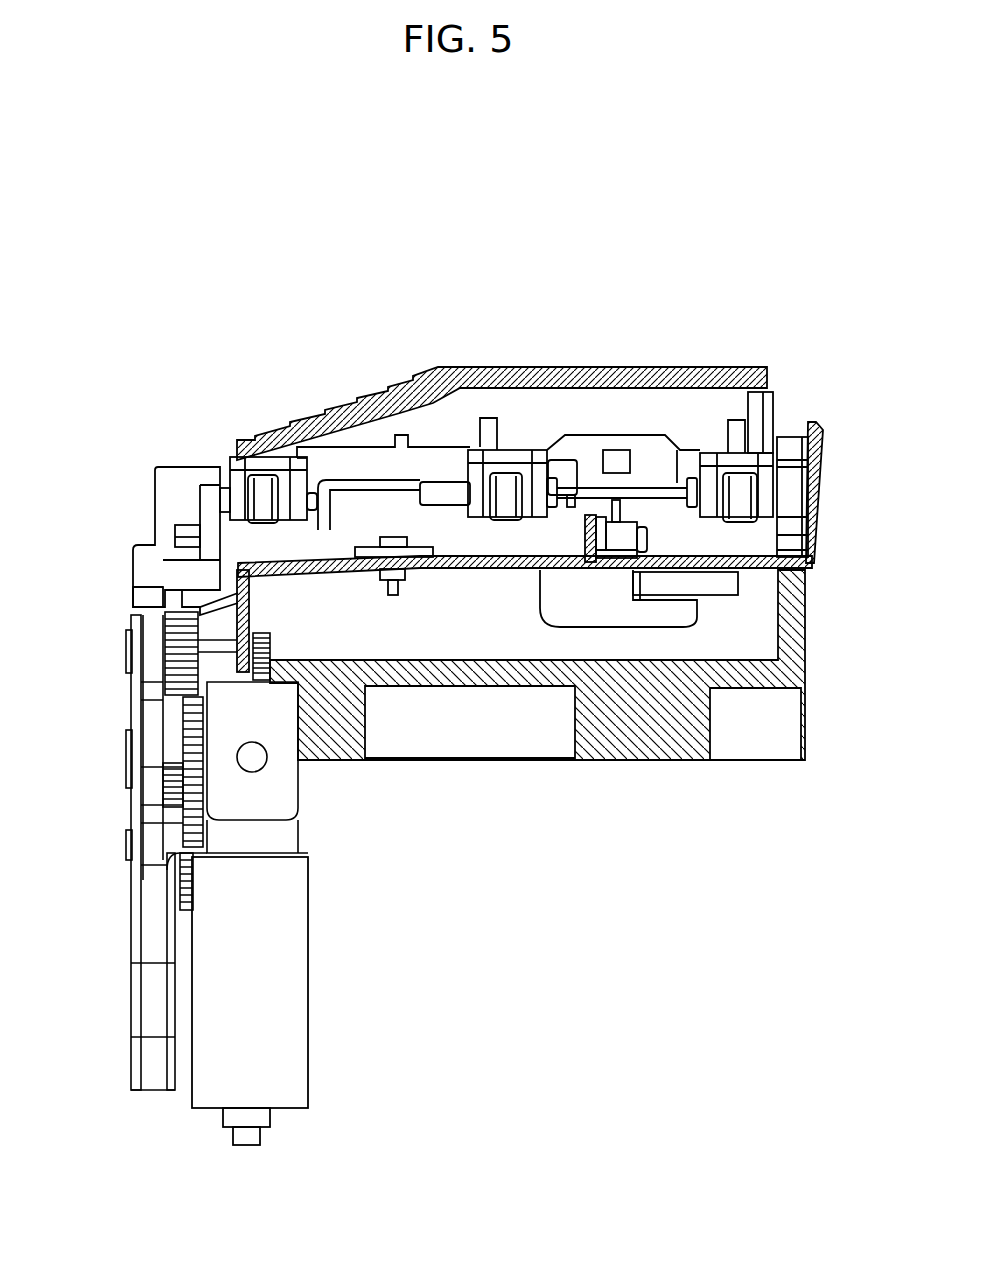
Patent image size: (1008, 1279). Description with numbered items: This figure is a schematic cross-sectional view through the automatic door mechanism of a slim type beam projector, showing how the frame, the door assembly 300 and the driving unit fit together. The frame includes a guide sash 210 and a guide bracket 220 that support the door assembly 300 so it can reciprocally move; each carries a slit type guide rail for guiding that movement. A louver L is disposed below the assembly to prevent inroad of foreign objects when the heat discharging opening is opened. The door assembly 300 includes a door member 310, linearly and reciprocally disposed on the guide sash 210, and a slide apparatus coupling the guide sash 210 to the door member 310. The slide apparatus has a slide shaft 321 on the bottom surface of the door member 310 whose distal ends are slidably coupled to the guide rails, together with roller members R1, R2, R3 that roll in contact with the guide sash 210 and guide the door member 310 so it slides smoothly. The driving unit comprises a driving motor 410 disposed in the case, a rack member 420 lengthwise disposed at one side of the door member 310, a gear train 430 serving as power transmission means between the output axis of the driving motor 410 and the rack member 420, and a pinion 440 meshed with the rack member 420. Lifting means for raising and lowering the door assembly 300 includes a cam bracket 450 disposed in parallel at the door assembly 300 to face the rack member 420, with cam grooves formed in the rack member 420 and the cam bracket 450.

The door assembly 300 is at (470, 352).
The door member 310 is at (625, 370).
The slide shaft 321 is at (227, 487).
The roller member R1 is at (740, 495).
The roller member R2 is at (507, 490).
The roller member R3 is at (264, 495).
The guide bracket 220 is at (182, 512).
The rack member 420 is at (178, 577).
The pinion 440 is at (172, 625).
The gear train 430 is at (152, 714).
The driving motor 410 is at (272, 1025).
The cam bracket 450 is at (790, 487).
The guide sash 210 is at (825, 510).
The louver L is at (640, 745).